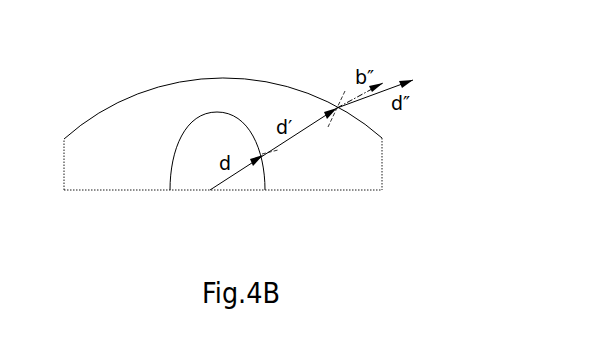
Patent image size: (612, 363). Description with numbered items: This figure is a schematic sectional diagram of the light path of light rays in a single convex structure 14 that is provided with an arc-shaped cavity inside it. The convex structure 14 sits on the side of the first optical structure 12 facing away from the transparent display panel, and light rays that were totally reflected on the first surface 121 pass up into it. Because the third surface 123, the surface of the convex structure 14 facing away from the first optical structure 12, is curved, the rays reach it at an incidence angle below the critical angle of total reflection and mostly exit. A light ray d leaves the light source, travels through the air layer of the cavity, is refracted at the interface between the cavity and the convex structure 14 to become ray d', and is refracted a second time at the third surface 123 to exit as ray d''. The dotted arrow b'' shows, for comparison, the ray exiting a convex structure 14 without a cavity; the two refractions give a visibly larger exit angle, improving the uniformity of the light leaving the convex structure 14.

The convex structure 14 is at (128, 113).
The first optical structure 12 is at (105, 175).
The first surface 121 is at (295, 191).
The third surface 123 is at (193, 80).